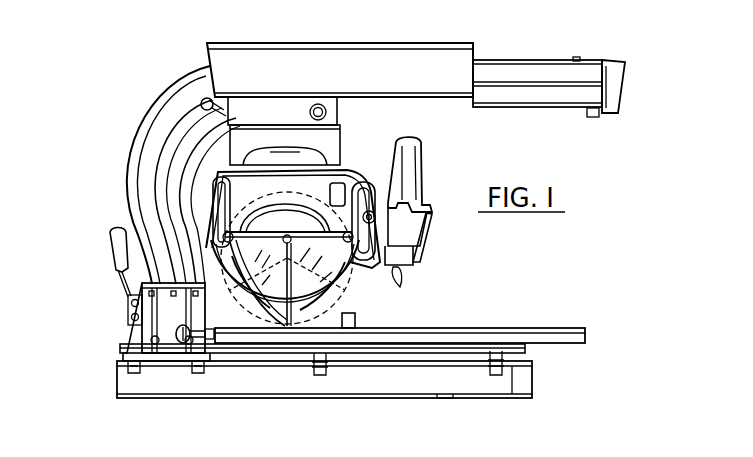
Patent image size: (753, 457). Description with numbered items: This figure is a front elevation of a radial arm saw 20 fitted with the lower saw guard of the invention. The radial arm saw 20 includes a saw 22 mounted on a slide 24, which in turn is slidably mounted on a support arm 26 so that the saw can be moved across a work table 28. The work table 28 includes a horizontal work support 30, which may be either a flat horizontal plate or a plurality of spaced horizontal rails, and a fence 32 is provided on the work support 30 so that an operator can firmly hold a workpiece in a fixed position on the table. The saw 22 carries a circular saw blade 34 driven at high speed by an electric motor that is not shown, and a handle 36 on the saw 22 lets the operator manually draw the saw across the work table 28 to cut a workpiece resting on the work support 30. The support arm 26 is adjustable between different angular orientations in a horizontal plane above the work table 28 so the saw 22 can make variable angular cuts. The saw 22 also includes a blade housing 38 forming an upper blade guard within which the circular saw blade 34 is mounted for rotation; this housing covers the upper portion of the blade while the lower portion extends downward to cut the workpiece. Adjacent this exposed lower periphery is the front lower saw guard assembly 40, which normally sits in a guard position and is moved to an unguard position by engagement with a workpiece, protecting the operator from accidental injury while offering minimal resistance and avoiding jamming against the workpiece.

The radial arm saw 20 is at (132, 96).
The saw 22 is at (209, 170).
The slide 24 is at (343, 77).
The support arm 26 is at (532, 76).
The work table 28 is at (283, 378).
The horizontal work support 30 is at (477, 337).
The fence 32 is at (348, 330).
The circular saw blade 34 is at (287, 262).
The handle 36 is at (410, 167).
The blade housing 38 is at (348, 177).
The front lower saw guard assembly 40 is at (366, 293).